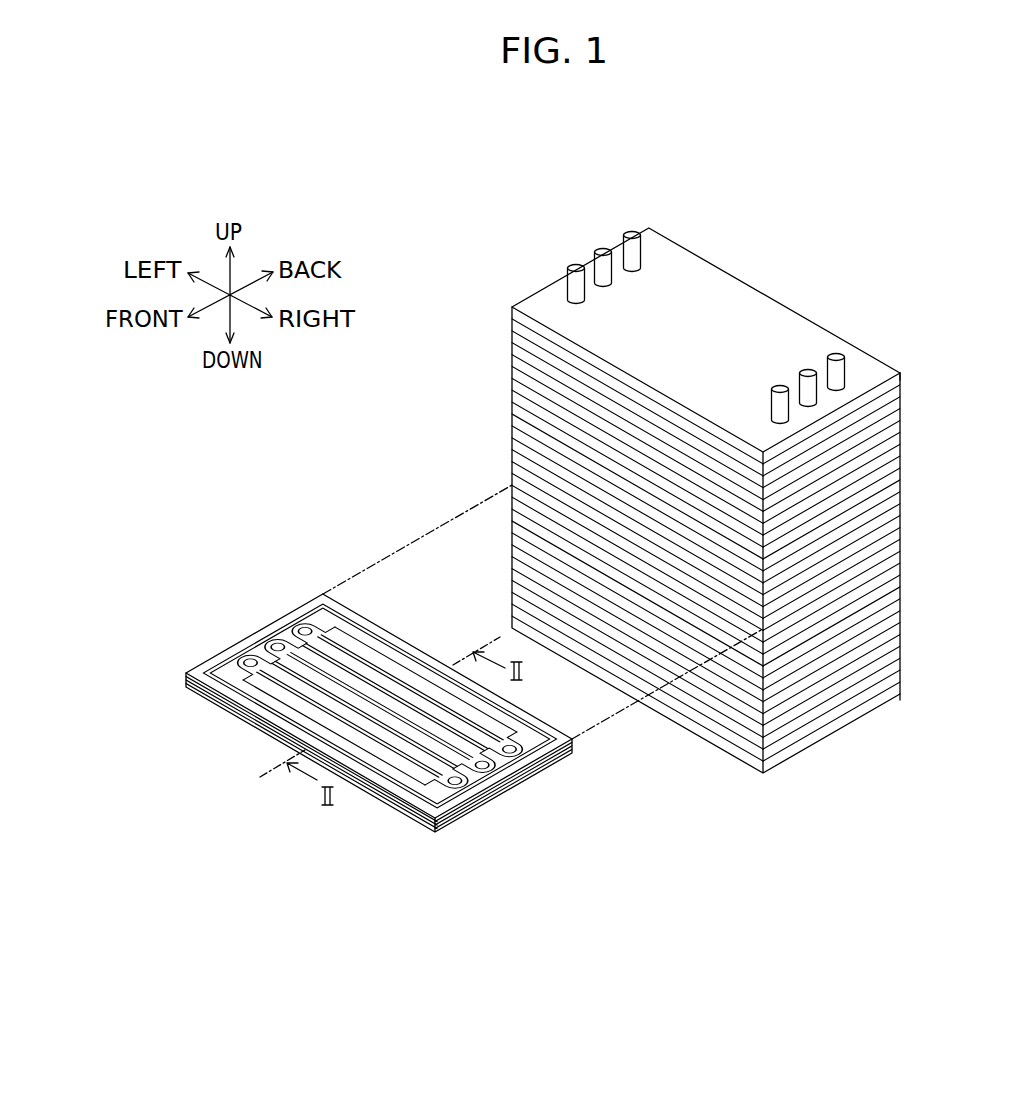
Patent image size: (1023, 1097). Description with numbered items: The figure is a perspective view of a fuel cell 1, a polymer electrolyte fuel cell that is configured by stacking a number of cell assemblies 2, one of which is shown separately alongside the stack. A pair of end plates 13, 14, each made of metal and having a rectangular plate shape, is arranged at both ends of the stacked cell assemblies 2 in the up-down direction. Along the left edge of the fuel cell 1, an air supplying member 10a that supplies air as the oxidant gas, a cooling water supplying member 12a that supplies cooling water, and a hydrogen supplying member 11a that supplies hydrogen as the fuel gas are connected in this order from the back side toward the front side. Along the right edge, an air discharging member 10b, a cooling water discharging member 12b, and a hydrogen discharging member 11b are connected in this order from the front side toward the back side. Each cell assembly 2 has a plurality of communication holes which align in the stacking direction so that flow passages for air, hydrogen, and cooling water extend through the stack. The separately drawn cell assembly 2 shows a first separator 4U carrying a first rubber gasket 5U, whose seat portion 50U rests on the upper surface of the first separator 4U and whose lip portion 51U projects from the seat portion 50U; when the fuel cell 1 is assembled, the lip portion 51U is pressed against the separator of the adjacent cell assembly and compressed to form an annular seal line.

The fuel cell 1 is at (872, 249).
The cell assembly 2 is at (193, 561).
The first separator 4U is at (318, 636).
The first rubber gasket 5U is at (195, 667).
The air supplying member 10a is at (632, 231).
The air discharging member 10b is at (779, 385).
The hydrogen supplying member 11a is at (575, 264).
The hydrogen discharging member 11b is at (837, 353).
The cooling water supplying member 12a is at (603, 248).
The cooling water discharging member 12b is at (808, 369).
The end plate 13 is at (893, 380).
The end plate 14 is at (887, 700).
The seat portion 50U is at (362, 625).
The lip portion 51U is at (380, 706).